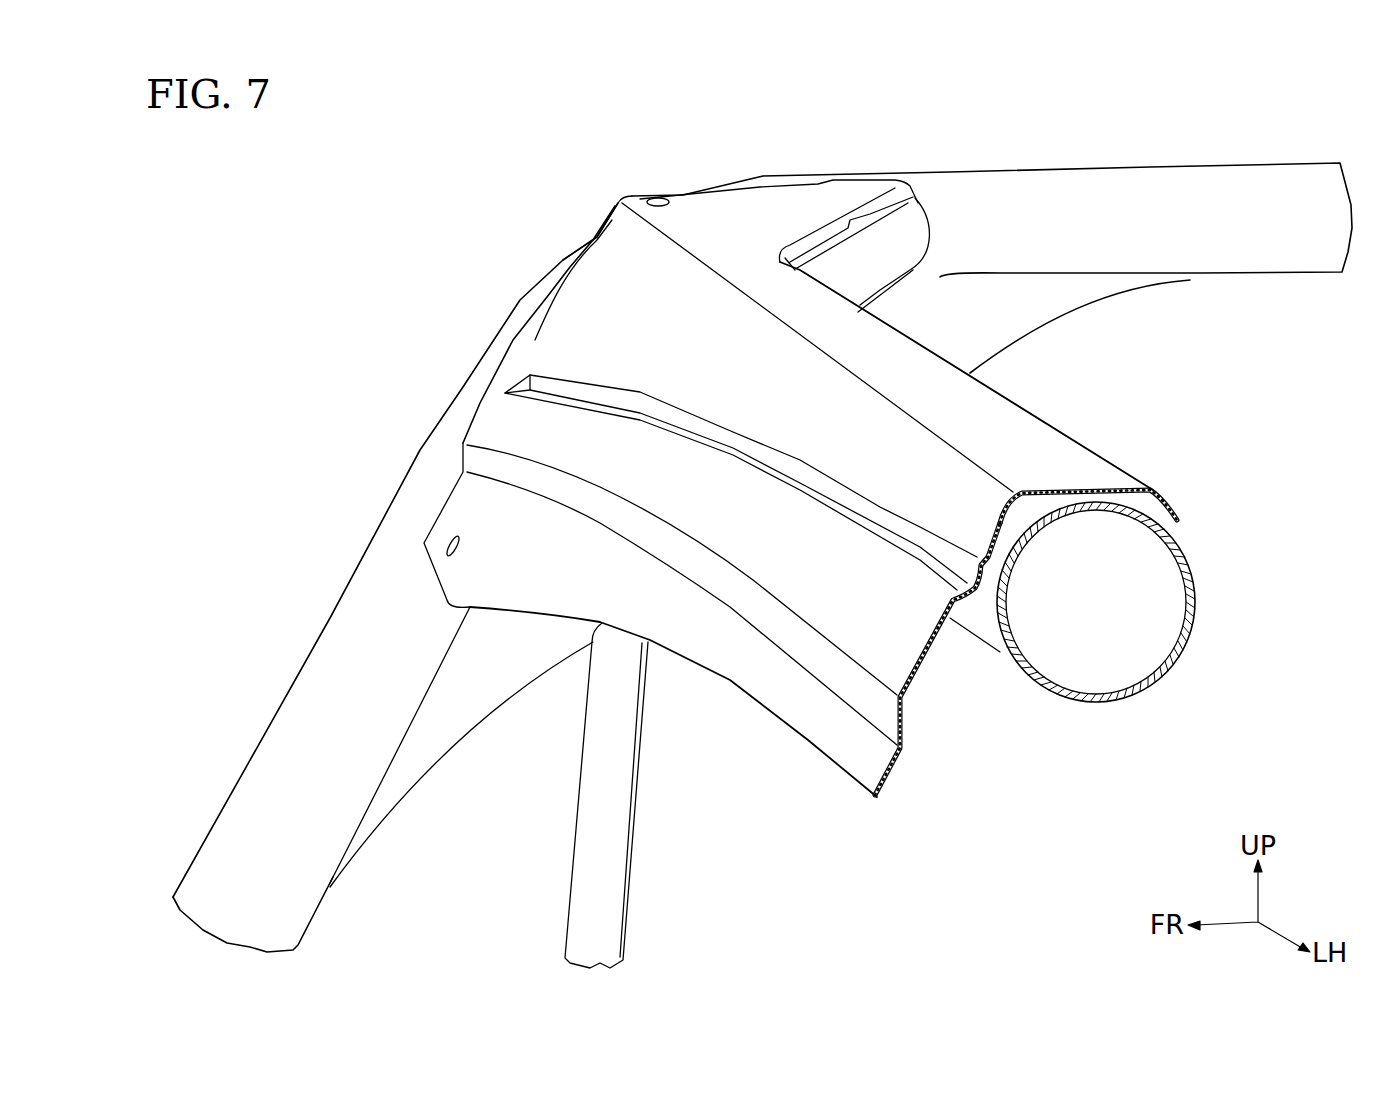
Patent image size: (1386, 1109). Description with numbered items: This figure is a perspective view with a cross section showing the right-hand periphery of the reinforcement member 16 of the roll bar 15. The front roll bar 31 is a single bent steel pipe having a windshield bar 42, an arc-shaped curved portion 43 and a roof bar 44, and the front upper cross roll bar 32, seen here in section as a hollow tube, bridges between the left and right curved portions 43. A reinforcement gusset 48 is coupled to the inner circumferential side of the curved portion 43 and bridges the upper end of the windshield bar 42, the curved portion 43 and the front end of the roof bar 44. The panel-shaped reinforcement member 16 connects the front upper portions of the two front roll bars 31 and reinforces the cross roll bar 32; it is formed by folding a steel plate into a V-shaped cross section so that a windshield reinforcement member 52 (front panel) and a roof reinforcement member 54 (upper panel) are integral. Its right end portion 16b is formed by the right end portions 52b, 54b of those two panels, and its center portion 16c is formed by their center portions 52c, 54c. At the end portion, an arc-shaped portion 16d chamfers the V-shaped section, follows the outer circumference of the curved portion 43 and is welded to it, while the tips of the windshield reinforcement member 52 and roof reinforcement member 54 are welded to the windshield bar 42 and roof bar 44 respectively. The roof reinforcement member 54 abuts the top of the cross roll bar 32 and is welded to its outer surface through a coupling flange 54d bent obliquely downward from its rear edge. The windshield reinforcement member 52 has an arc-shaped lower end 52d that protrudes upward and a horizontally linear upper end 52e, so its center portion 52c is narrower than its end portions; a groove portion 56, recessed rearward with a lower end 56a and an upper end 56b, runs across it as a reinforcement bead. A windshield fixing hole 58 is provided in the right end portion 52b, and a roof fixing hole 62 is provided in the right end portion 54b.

The roll bar 15 is at (404, 236).
The reinforcement member 16 is at (1262, 340).
The right end portion of the reinforcement member 16b is at (538, 357).
The center portion of the reinforcement member 16c is at (893, 665).
The arc-shaped portion 16d is at (557, 292).
The front roll bar 31 is at (406, 465).
The front upper cross roll bar 32 is at (985, 625).
The windshield bar 42 is at (295, 735).
The curved portion 43 is at (560, 265).
The roof bar 44 is at (1155, 192).
The reinforcement gusset 48 is at (1083, 300).
The windshield reinforcement member 52 is at (983, 490).
The right end portion of the windshield reinforcement member 52b is at (582, 328).
The center portion of the windshield reinforcement member 52c is at (980, 517).
The lower end of the windshield reinforcement member 52d is at (832, 765).
The upper end of the windshield reinforcement member 52e is at (890, 392).
The roof reinforcement member 54 is at (995, 393).
The right end portion of the roof reinforcement member 54b is at (762, 207).
The center portion of the roof reinforcement member 54c is at (1107, 472).
The coupling flange 54d is at (893, 207).
The groove portion 56 is at (882, 541).
The lower end of the groove portion 56a is at (800, 488).
The upper end of the groove portion 56b is at (768, 452).
The windshield fixing hole 58 is at (447, 545).
The roof fixing hole 62 is at (660, 198).